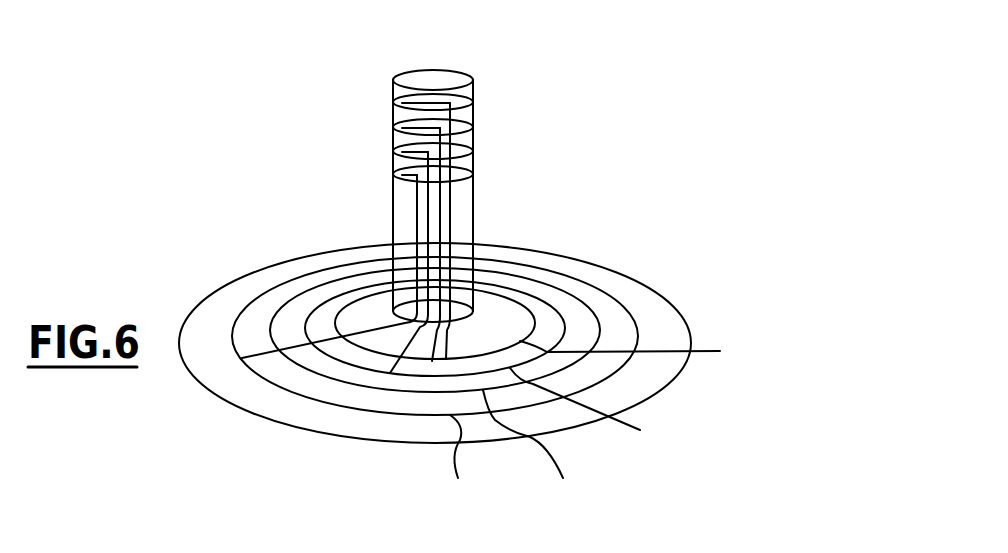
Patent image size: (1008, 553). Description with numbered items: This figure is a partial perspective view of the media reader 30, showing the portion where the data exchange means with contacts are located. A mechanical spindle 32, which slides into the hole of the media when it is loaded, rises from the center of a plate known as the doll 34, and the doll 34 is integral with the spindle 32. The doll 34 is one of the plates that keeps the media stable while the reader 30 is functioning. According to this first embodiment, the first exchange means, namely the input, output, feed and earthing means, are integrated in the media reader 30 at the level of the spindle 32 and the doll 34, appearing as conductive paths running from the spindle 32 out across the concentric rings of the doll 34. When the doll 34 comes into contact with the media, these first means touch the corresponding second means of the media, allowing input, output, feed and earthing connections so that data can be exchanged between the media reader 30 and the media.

The media reader 30 is at (349, 181).
The mechanical spindle 32 is at (440, 80).
The doll 34 is at (635, 288).